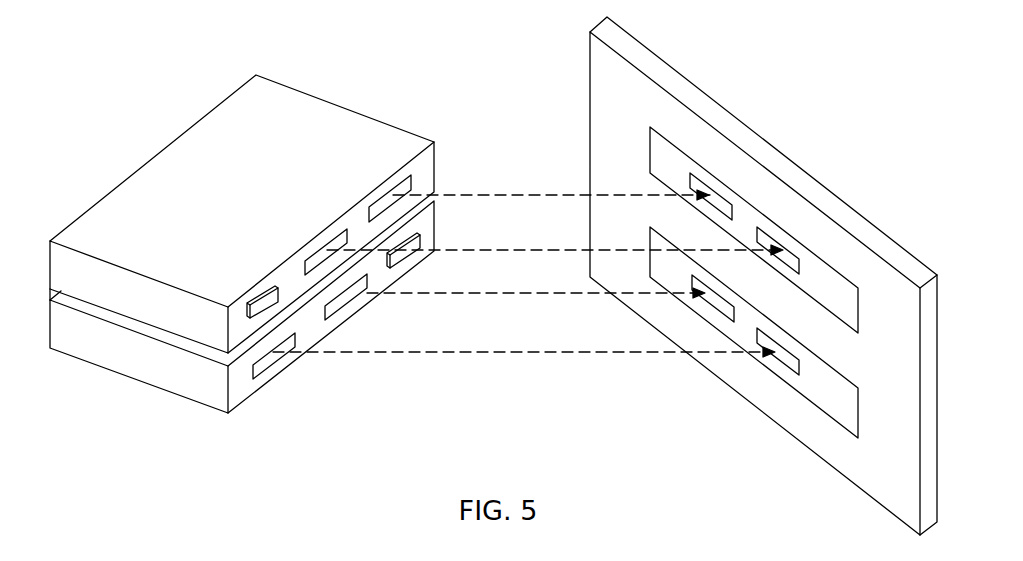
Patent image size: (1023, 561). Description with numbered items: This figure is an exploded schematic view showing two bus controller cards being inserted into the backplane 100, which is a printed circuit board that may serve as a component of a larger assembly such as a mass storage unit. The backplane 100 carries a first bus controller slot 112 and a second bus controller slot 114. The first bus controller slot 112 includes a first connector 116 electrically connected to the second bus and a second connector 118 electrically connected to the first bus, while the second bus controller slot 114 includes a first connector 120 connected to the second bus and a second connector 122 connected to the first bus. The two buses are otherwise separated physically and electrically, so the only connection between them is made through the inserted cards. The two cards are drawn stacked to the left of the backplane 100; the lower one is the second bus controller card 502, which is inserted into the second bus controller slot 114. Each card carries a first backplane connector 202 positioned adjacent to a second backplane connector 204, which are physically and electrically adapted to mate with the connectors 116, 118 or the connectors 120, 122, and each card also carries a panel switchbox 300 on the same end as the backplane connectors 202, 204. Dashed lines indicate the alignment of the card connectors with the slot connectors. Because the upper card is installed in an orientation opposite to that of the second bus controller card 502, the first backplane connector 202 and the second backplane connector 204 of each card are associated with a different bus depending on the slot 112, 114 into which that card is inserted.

The backplane 100 is at (883, 250).
The first bus controller slot 112 is at (860, 312).
The second bus controller slot 114 is at (860, 415).
The first connector 116 is at (718, 200).
The second connector 118 is at (787, 253).
The first connector 120 is at (720, 308).
The second connector 122 is at (785, 358).
The first backplane connector 202 is at (316, 258).
The second backplane connector 204 is at (382, 204).
The panel switchbox 300 is at (268, 287).
The second bus controller card 502 is at (158, 390).